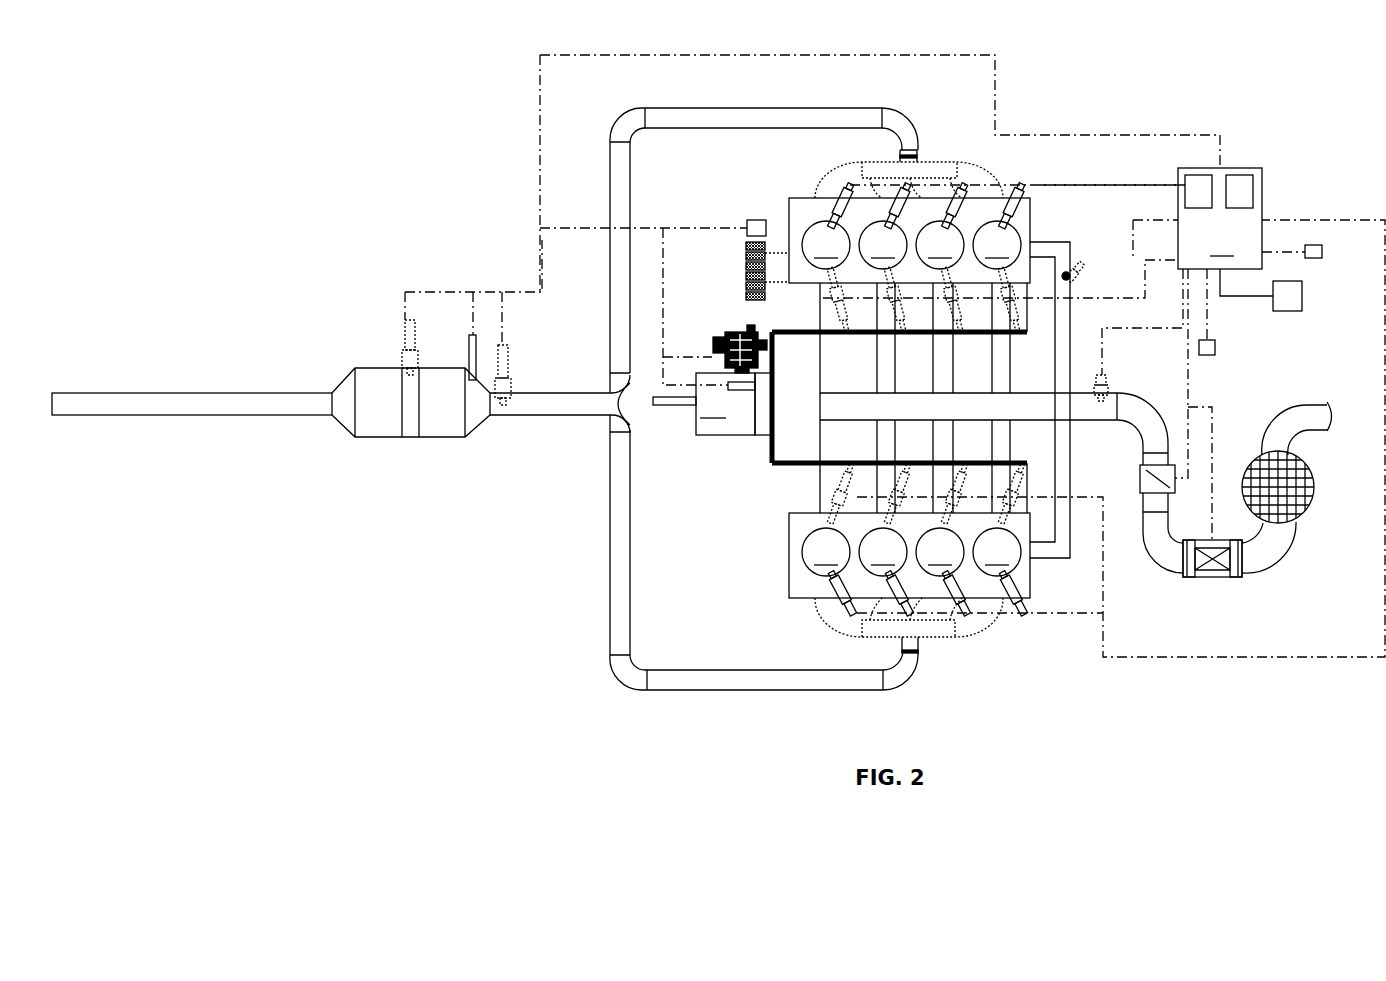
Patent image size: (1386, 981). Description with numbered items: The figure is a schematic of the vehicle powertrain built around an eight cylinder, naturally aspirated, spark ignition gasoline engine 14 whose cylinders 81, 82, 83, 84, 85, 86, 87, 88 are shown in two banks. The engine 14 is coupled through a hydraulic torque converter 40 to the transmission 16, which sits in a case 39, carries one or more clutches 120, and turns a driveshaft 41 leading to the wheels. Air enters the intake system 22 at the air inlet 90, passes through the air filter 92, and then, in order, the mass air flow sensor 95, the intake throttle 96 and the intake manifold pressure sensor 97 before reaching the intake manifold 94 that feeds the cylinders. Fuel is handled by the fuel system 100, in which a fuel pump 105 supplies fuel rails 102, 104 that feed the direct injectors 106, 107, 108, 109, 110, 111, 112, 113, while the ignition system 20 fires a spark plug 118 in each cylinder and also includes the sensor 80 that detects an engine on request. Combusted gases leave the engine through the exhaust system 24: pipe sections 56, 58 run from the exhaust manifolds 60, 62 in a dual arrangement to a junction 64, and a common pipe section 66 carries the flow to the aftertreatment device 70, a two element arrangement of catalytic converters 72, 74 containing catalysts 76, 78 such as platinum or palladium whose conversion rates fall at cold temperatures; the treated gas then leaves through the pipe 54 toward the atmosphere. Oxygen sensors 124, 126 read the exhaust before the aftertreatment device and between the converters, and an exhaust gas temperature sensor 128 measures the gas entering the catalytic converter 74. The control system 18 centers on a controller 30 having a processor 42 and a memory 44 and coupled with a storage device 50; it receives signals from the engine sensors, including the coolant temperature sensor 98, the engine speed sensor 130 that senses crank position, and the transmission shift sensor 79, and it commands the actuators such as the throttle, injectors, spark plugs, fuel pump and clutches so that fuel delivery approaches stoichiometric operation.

The engine 14 is at (922, 140).
The transmission 16 is at (725, 404).
The control system 18 is at (1252, 152).
The ignition system 20 is at (1120, 118).
The intake system 22 is at (1328, 372).
The exhaust system 24 is at (562, 465).
The controller 30 is at (1156, 354).
The case 39 is at (703, 437).
The torque converter 40 is at (760, 420).
The driveshaft 41 is at (678, 405).
The processor 42 is at (1188, 185).
The memory 44 is at (1247, 192).
The storage device 50 is at (1283, 312).
The exhaust pipe 54 is at (283, 416).
The intake passage 56 is at (897, 128).
The pipe section 58 is at (890, 672).
The exhaust manifold 60 is at (975, 180).
The exhaust manifold 62 is at (995, 616).
The junction 64 is at (600, 420).
The common pipe section 66 is at (500, 420).
The aftertreatment device 70 is at (393, 492).
The catalytic converter 72 is at (392, 366).
The catalytic converter 74 is at (447, 440).
The catalyst 76 is at (383, 440).
The catalyst 78 is at (440, 440).
The transmission shift sensor 79 is at (1207, 357).
The sensor 80 is at (1322, 251).
The cylinder 81 is at (997, 245).
The cylinder 82 is at (997, 552).
The cylinder 83 is at (940, 245).
The cylinder 84 is at (940, 552).
The cylinder 85 is at (883, 245).
The cylinder 86 is at (883, 552).
The cylinder 87 is at (826, 245).
The cylinder 88 is at (826, 552).
The air inlet 90 is at (1325, 405).
The air filter 92 is at (1300, 515).
The intake manifold 94 is at (1050, 394).
The mass air flow sensor 95 is at (1213, 580).
The intake throttle 96 is at (1140, 478).
The intake manifold pressure sensor 97 is at (1110, 378).
The coolant temperature sensor 98 is at (1086, 266).
The fuel system 100 is at (766, 484).
The fuel rail 102 is at (792, 337).
The fuel rail 104 is at (800, 458).
The fuel pump 105 is at (742, 330).
The fuel injector 106 is at (1032, 302).
The fuel injector 107 is at (965, 310).
The fuel injector 108 is at (905, 290).
The fuel injector 109 is at (830, 296).
The fuel injector 110 is at (1035, 444).
The fuel injector 111 is at (975, 478).
The fuel injector 112 is at (905, 490).
The fuel injector 113 is at (832, 493).
The spark plug 118 is at (822, 214).
The clutch 120 is at (735, 437).
The oxygen sensor 124 is at (512, 382).
The oxygen sensor 126 is at (408, 320).
The exhaust gas temperature sensor 128 is at (469, 348).
The engine speed sensor 130 is at (755, 220).